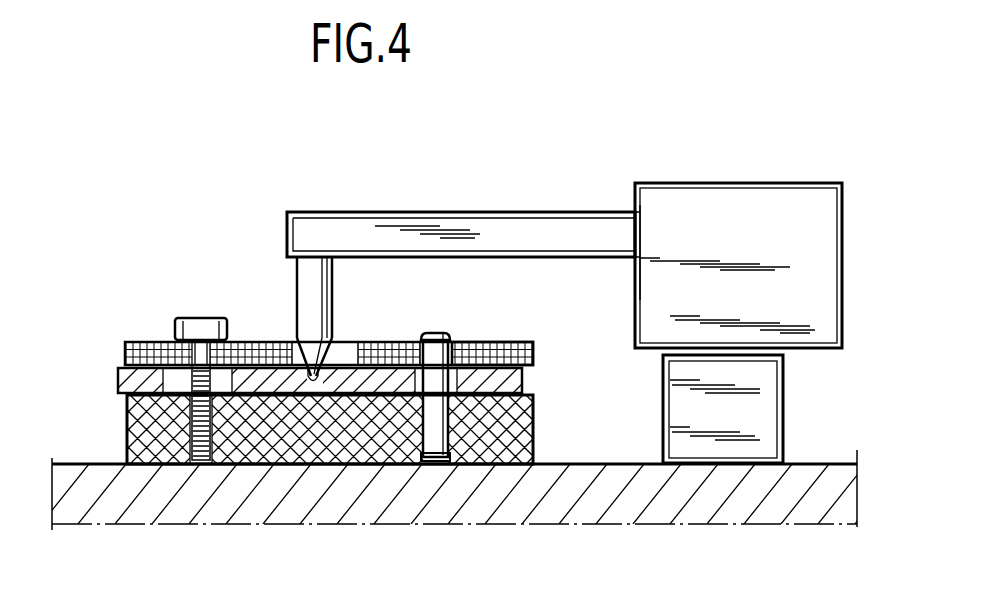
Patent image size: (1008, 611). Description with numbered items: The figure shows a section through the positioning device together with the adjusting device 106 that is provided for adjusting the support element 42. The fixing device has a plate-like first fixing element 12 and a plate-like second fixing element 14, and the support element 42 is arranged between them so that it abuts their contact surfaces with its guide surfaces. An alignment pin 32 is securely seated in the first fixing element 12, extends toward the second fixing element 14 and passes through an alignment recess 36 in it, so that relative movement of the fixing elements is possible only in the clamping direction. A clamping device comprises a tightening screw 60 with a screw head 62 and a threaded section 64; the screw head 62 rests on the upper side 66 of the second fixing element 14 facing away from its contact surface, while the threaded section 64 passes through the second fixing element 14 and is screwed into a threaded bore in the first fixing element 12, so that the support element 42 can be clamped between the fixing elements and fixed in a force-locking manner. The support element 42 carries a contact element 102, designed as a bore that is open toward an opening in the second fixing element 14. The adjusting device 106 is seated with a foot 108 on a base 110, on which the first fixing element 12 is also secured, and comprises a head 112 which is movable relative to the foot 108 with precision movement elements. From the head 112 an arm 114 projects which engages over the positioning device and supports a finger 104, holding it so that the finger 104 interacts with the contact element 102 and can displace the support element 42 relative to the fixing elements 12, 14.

The first fixing element 12 is at (542, 428).
The second fixing element 14 is at (521, 337).
The alignment pin 32 is at (437, 447).
The alignment recess 36 is at (445, 333).
The support element 42 is at (538, 380).
The tightening screw 60 is at (173, 423).
The screw head 62 is at (205, 328).
The threaded section 64 is at (203, 463).
The upper side 66 is at (147, 340).
The contact element 102 is at (317, 382).
The finger 104 is at (317, 313).
The adjusting device 106 is at (747, 178).
The foot 108 is at (735, 425).
The base 110 is at (639, 488).
The head 112 is at (643, 300).
The arm 114 is at (500, 230).